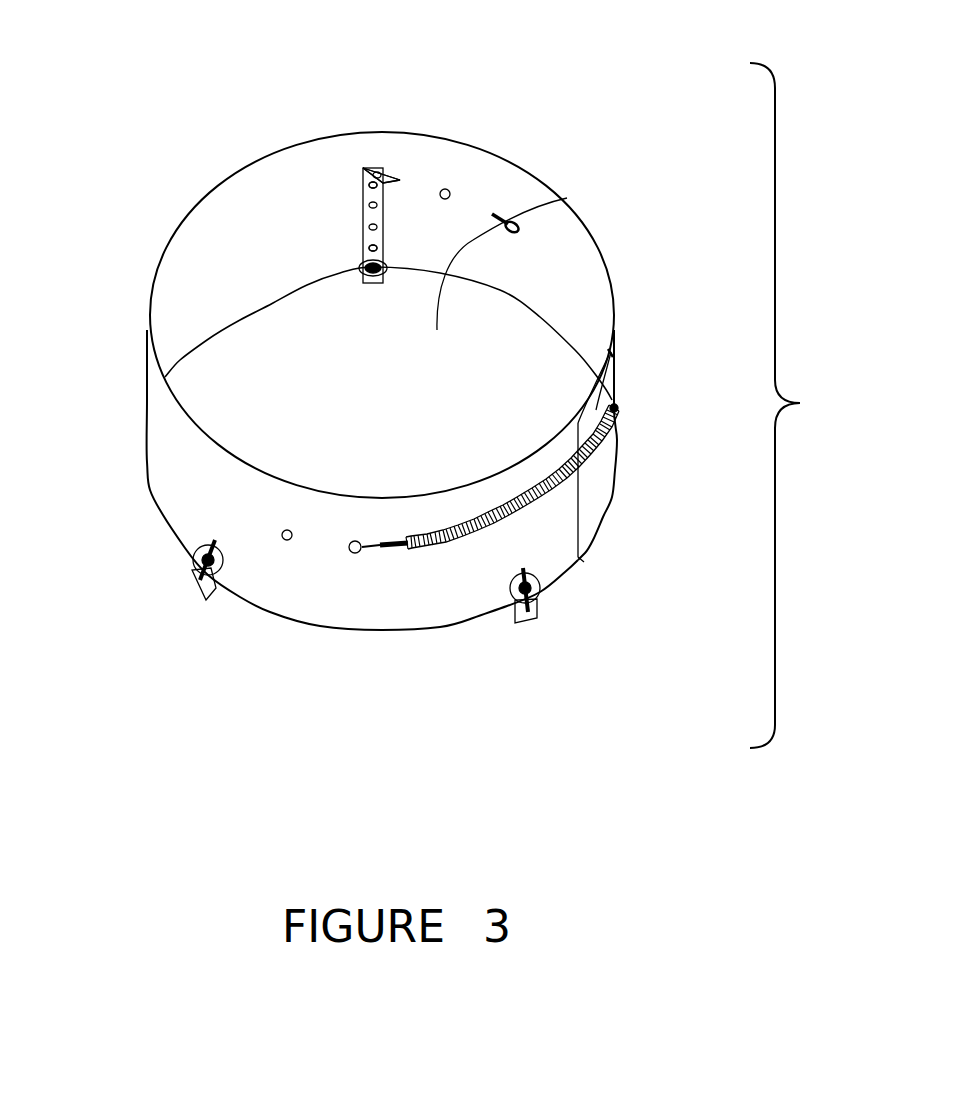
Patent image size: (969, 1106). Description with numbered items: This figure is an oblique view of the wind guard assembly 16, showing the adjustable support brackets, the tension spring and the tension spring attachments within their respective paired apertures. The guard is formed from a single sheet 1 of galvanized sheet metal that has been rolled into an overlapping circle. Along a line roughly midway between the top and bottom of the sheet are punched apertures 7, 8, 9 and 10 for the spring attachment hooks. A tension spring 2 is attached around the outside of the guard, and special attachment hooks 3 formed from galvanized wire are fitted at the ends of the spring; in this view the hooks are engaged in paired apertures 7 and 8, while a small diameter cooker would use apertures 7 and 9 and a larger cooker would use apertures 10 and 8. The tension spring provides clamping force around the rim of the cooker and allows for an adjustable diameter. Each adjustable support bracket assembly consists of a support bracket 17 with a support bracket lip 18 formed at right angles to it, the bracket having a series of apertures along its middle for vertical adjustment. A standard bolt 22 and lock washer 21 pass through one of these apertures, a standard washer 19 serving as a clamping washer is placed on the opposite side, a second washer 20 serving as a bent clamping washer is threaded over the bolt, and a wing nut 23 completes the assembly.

The sheet 1 is at (548, 181).
The tension spring 2 is at (548, 498).
The attachment hooks 3 is at (377, 680).
The aperture 7 is at (356, 553).
The aperture 8 is at (567, 198).
The aperture 9 is at (450, 192).
The aperture 10 is at (288, 529).
The wind guard assembly 16 is at (810, 405).
The support bracket 17 is at (364, 169).
The support bracket lip 18 is at (398, 179).
The washer 19 is at (360, 267).
The second washer 20 is at (193, 550).
The lock washer 21 is at (360, 268).
The bolt 22 is at (362, 270).
The wing nut 23 is at (209, 545).